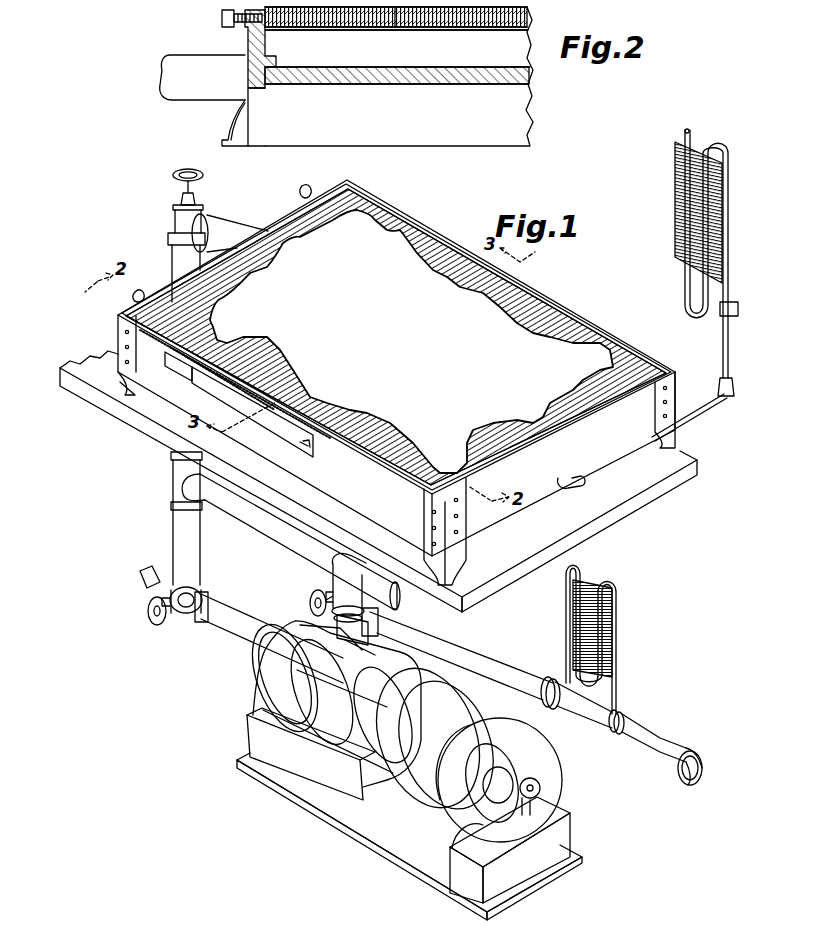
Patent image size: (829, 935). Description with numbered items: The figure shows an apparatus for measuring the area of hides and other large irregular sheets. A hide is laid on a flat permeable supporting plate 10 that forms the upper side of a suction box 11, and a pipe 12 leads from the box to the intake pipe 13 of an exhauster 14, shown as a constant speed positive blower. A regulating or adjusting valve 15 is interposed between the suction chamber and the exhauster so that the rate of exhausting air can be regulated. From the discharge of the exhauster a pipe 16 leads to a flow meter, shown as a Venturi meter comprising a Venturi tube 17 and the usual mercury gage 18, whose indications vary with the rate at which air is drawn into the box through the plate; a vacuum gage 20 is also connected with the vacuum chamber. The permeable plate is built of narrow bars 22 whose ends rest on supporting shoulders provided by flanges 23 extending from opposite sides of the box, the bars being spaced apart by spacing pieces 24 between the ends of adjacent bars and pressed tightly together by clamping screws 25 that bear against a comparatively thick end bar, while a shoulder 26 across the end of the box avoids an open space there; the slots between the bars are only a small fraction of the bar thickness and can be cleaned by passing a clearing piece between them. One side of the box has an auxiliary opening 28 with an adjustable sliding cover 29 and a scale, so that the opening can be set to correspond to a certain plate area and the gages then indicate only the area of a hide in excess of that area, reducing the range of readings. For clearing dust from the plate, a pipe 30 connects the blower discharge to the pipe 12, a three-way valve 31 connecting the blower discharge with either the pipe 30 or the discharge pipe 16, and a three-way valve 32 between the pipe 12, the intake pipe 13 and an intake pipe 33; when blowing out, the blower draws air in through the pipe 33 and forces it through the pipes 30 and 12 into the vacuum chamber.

In FIG. 1, the flat permeable supporting plate 10 is at (520, 300).
In FIG. 2, the suction box 11 is at (530, 60).
In FIG. 1, the suction box 11 is at (605, 440).
In FIG. 2, the pipe 12 is at (208, 97).
In FIG. 1, the pipe 12 is at (175, 258).
In FIG. 1, the intake pipe 13 is at (236, 637).
In FIG. 1, the exhauster 14 is at (275, 695).
In FIG. 1, the regulating or adjusting valve 15 is at (177, 210).
In FIG. 1, the pipe 16 is at (492, 642).
In FIG. 1, the Venturi tube 17 is at (591, 718).
In FIG. 1, the mercury gage 18 is at (585, 583).
In FIG. 1, the vacuum gage 20 is at (681, 179).
In FIG. 2, the bars 22 is at (466, 30).
In FIG. 1, the bars 22 is at (552, 324).
In FIG. 2, the flanges 23 is at (332, 30).
In FIG. 2, the spacing pieces 24 is at (402, 26).
In FIG. 1, the spacing pieces 24 is at (587, 348).
In FIG. 2, the clamping screws 25 is at (222, 18).
In FIG. 1, the clamping screws 25 is at (303, 194).
In FIG. 2, the shoulder 26 is at (268, 32).
In FIG. 1, the opening 28 is at (178, 366).
In FIG. 1, the adjustable sliding cover 29 is at (212, 393).
In FIG. 1, the pipe 30 is at (277, 537).
In FIG. 1, the three-way valve 31 is at (332, 591).
In FIG. 1, the three-way valve 32 is at (183, 615).
In FIG. 1, the intake pipe 33 is at (146, 595).